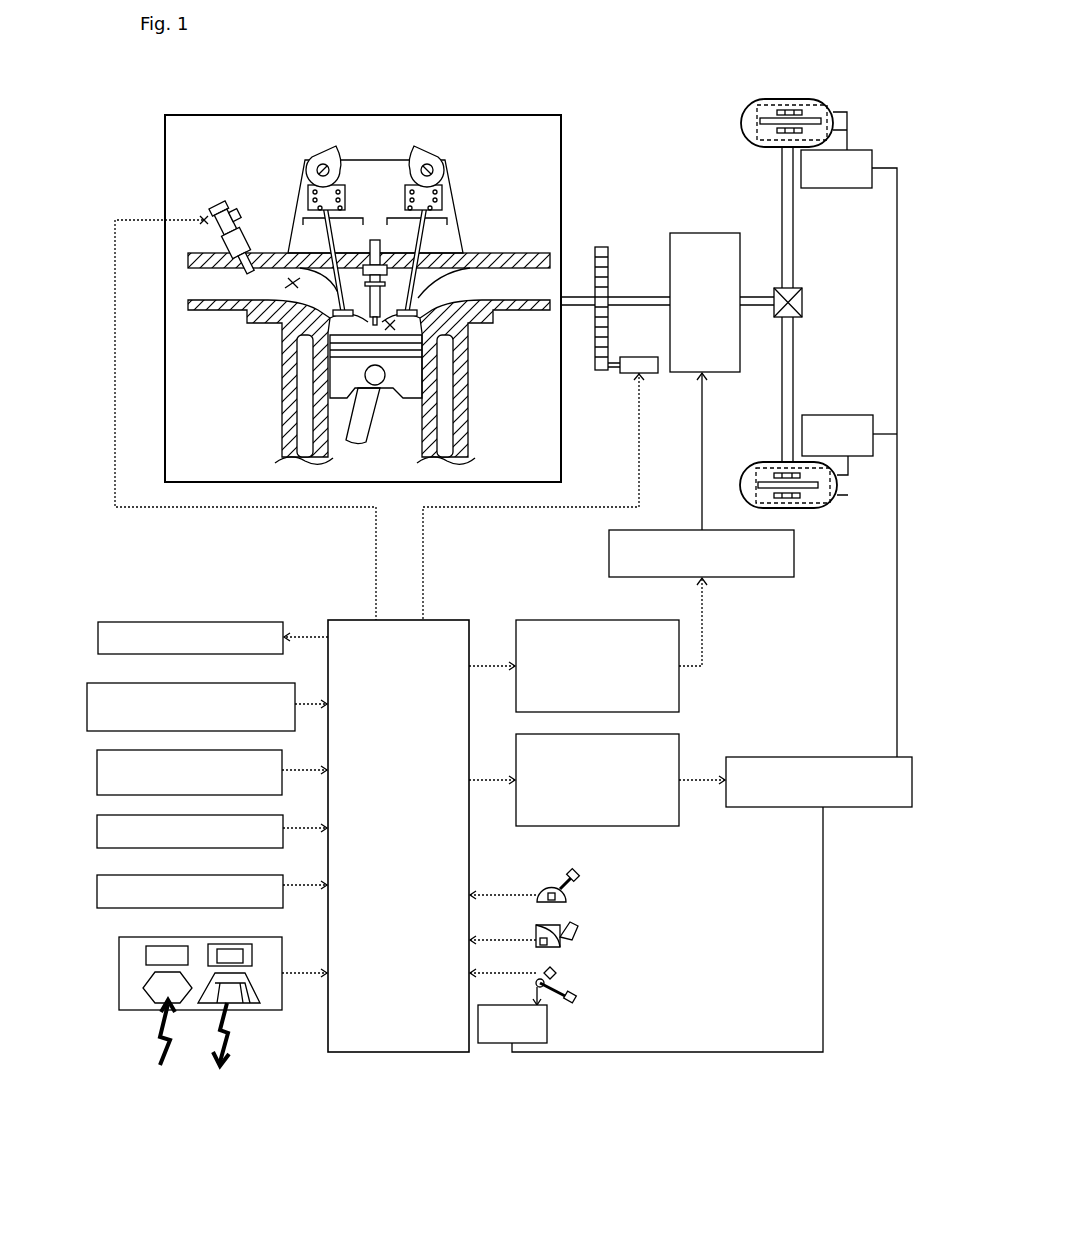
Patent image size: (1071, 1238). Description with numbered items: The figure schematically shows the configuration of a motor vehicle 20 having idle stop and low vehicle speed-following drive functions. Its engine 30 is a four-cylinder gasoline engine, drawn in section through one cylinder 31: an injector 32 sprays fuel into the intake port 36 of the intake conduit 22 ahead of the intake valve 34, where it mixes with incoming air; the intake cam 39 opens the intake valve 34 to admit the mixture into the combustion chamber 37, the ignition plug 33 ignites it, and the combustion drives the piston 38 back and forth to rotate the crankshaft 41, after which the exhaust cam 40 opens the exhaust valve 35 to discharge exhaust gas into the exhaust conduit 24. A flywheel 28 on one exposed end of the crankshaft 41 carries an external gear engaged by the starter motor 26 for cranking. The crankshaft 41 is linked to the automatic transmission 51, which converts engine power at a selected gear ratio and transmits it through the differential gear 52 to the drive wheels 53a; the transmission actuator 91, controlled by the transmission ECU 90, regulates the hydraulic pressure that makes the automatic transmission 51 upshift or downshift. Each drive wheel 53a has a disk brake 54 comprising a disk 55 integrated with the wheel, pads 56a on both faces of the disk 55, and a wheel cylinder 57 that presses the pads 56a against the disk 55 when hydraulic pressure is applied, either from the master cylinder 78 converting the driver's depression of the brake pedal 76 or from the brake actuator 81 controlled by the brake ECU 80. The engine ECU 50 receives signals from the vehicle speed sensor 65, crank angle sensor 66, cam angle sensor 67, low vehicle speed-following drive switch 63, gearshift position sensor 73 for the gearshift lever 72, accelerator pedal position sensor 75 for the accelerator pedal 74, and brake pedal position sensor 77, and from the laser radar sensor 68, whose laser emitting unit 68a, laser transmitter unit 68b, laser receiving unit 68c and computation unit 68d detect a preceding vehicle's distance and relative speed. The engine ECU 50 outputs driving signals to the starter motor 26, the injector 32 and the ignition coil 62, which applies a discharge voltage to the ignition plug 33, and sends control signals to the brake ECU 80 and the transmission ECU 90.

The motor vehicle 20 is at (599, 107).
The intake conduit 22 is at (206, 310).
The exhaust conduit 24 is at (543, 313).
The starter motor 26 is at (650, 369).
The flywheel 28 is at (603, 245).
The engine 30 is at (446, 115).
The cylinder 31 is at (447, 233).
The injector 32 is at (207, 214).
The ignition plug 33 is at (396, 322).
The intake valve 34 is at (297, 204).
The exhaust valve 35 is at (452, 196).
The intake port 36 is at (287, 278).
The combustion chamber 37 is at (379, 324).
The piston 38 is at (323, 370).
The intake cam 39 is at (327, 152).
The exhaust cam 40 is at (430, 155).
The crankshaft 41 is at (568, 297).
The engine electronic control unit 50 is at (400, 1053).
The automatic transmission 51 is at (675, 233).
The differential gear 52 is at (802, 289).
The drive wheel 53a is at (758, 100).
The disk brake 54 is at (753, 122).
The disk 55 is at (755, 113).
The pad 56a is at (783, 110).
The wheel cylinder 57 is at (862, 150).
The ignition coil 62 is at (98, 640).
The low vehicle speed-following drive switch 63 is at (87, 710).
The vehicle speed sensor 65 is at (97, 774).
The crank angle sensor 66 is at (97, 833).
The cam angle sensor 67 is at (97, 889).
The laser radar sensor 68 is at (119, 980).
The laser emitting unit 68a is at (247, 966).
The laser transmitter unit 68b is at (250, 998).
The laser receiving unit 68c is at (148, 1002).
The computation unit 68d is at (146, 966).
The gearshift lever 72 is at (570, 878).
The gearshift position sensor 73 is at (542, 893).
The accelerator pedal 74 is at (560, 925).
The accelerator pedal position sensor 75 is at (560, 942).
The brake pedal 76 is at (570, 997).
The brake pedal position sensor 77 is at (557, 972).
The master cylinder 78 is at (488, 1043).
The brake electronic control unit 80 is at (645, 826).
The brake actuator 81 is at (775, 757).
The transmission electronic control unit 90 is at (680, 700).
The transmission actuator 91 is at (795, 553).